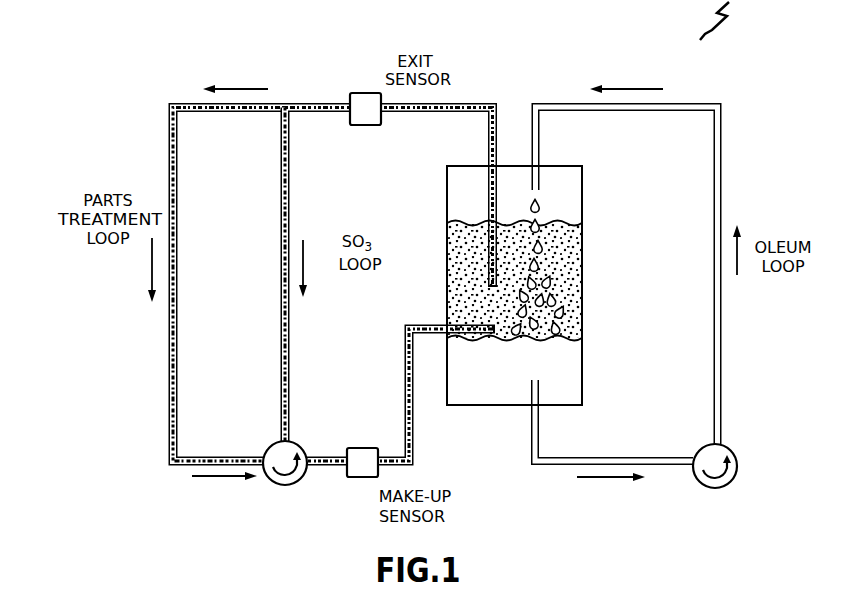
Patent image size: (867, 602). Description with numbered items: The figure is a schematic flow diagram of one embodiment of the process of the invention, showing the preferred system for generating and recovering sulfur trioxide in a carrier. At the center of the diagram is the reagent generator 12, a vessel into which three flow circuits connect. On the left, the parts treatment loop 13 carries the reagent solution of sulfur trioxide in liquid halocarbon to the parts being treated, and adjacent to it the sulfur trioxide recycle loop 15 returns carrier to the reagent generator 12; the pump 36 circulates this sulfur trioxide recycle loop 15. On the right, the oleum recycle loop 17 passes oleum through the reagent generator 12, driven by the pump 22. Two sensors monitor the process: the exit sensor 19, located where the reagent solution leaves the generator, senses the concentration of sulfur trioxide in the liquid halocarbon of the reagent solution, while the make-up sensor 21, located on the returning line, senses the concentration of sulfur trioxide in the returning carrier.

The reagent generator 12 is at (583, 213).
The parts treatment loop 13 is at (178, 275).
The sulfur trioxide recycle loop 15 is at (289, 222).
The oleum recycle loop 17 is at (722, 196).
The exit sensor 19 is at (357, 93).
The make-up sensor 21 is at (361, 448).
The pump 22 is at (735, 456).
The pump 36 is at (269, 448).